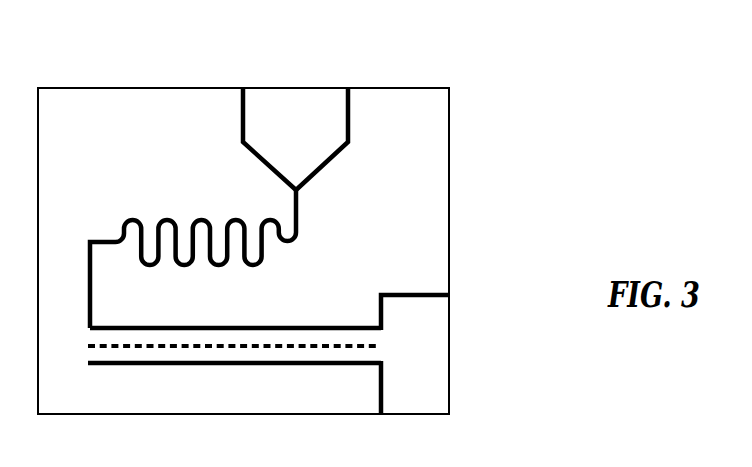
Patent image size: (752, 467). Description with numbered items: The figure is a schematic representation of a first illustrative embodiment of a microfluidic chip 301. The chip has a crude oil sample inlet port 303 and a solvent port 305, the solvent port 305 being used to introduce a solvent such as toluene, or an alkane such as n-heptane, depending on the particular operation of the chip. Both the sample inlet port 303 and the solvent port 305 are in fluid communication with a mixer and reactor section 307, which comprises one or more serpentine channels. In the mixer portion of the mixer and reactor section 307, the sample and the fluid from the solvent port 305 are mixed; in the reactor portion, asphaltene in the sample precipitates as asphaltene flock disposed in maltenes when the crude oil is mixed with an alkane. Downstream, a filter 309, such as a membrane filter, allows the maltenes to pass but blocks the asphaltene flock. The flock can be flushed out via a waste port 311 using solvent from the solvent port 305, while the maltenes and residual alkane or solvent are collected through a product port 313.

The microfluidic chip 301 is at (486, 82).
The crude oil sample inlet port 303 is at (348, 88).
The solvent port 305 is at (243, 88).
The mixer and reactor section 307 is at (200, 218).
The filter 309 is at (213, 345).
The waste port 311 is at (450, 290).
The product port 313 is at (382, 414).